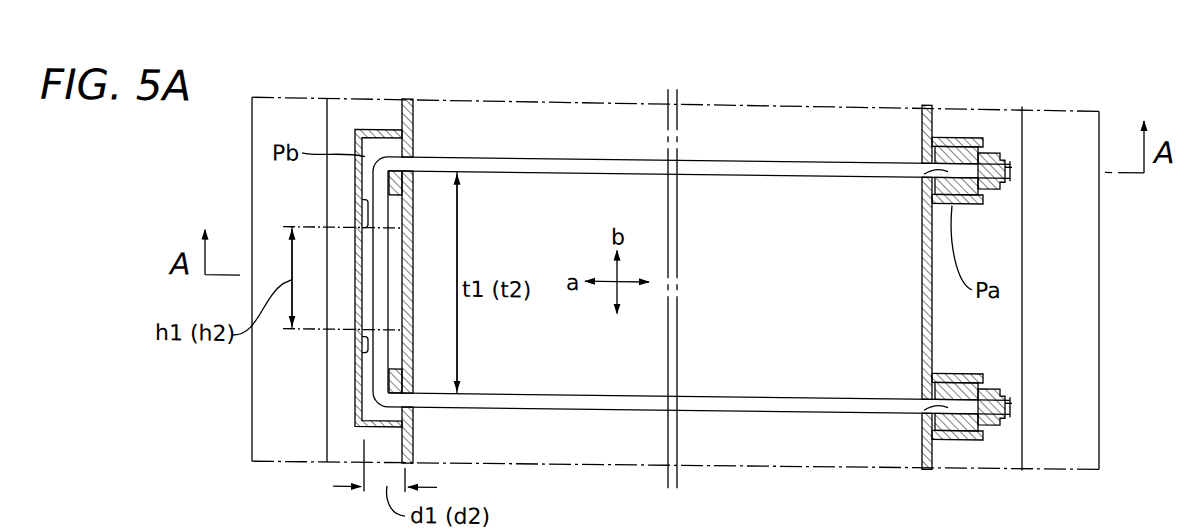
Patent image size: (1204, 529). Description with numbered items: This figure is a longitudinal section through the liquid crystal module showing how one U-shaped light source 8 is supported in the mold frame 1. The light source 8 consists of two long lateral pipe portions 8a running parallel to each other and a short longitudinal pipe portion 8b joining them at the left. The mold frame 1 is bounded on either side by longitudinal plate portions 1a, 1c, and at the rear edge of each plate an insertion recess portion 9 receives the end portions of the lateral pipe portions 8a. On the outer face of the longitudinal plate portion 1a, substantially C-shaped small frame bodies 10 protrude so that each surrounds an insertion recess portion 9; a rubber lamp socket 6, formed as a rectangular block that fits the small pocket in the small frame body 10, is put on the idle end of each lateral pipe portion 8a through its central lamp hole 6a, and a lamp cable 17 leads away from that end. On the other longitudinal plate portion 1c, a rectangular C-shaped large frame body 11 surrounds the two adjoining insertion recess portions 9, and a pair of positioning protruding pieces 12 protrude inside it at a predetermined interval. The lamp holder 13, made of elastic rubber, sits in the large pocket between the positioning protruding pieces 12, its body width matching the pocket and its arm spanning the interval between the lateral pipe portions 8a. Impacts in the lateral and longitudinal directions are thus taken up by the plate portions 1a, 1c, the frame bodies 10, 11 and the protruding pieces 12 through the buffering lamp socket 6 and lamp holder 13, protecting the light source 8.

The mold frame 1 is at (1104, 306).
The longitudinal plate portion 1a is at (921, 295).
The longitudinal plate portion 1c is at (413, 120).
The lamp socket 6 is at (995, 152).
The lamp hole 6a is at (944, 168).
The U-shaped light source 8 is at (777, 153).
The lateral pipe portion 8a is at (703, 164).
The longitudinal pipe portion 8b is at (375, 375).
The insertion recess portion 9 is at (930, 143).
The small frame body 10 is at (967, 198).
The large frame body 11 is at (357, 414).
The positioning protruding piece 12 is at (358, 196).
The lamp holder 13 is at (390, 158).
The lamp cable 17 is at (1011, 165).